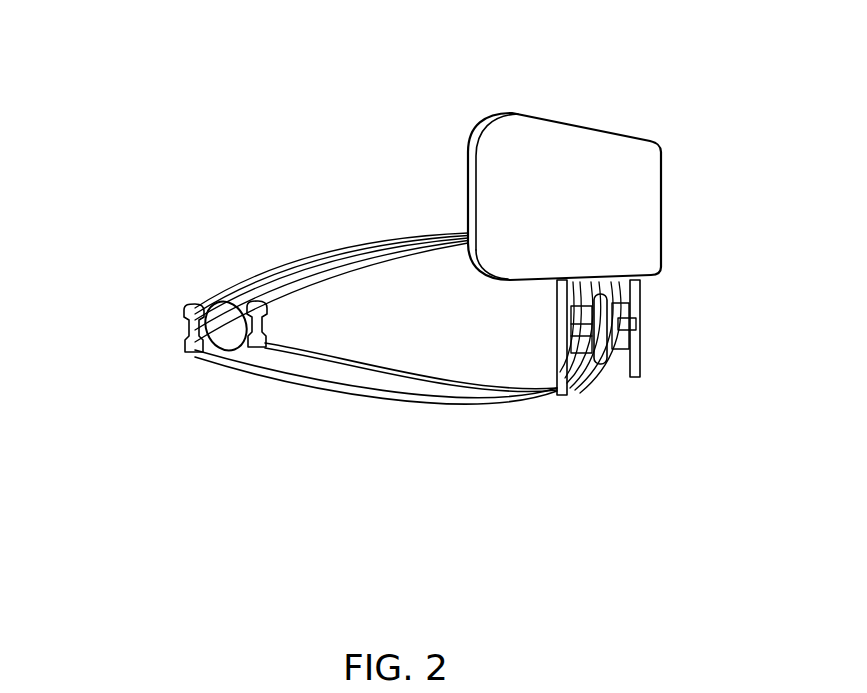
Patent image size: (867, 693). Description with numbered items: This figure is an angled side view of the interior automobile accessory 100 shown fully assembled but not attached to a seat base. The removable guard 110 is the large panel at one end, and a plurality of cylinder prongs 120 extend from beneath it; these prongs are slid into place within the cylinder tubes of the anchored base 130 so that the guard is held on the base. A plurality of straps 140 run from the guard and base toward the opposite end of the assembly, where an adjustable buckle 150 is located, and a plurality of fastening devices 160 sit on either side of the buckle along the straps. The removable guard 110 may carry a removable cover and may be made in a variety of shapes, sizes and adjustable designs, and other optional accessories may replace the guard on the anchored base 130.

The interior automobile accessory 100 is at (302, 68).
The removable guard 110 is at (598, 142).
The cylinder prongs 120 is at (641, 282).
The anchored base 130 is at (641, 329).
The straps 140 is at (360, 255).
The adjustable buckle 150 is at (222, 318).
The fastening devices 160 is at (182, 344).